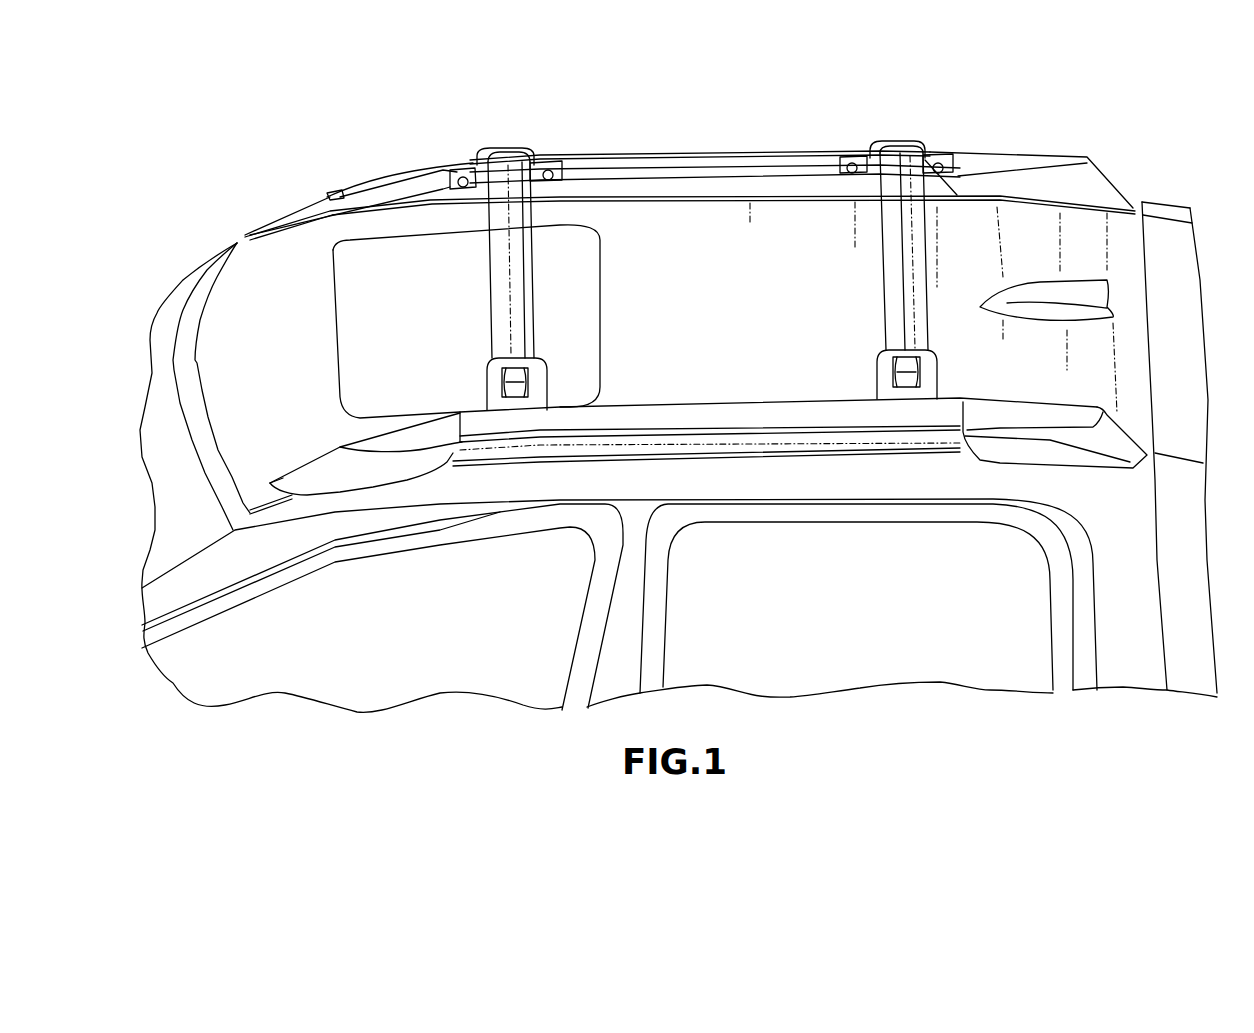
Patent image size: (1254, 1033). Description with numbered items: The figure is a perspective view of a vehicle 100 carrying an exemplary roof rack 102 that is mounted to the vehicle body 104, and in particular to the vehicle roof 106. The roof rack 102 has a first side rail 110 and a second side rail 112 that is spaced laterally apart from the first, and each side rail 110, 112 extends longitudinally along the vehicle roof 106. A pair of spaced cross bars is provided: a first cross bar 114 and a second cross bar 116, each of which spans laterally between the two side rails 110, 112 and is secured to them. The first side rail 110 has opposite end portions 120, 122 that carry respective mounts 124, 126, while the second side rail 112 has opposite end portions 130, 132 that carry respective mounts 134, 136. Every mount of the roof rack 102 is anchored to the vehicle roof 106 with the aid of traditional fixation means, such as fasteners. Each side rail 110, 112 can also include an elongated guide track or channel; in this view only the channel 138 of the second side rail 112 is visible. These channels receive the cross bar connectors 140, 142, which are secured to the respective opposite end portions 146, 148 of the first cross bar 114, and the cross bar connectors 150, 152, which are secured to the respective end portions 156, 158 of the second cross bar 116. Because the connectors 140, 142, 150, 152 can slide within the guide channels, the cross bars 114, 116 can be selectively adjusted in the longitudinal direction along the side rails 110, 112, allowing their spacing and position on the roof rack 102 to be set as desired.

The vehicle 100 is at (318, 738).
The roof rack 102 is at (508, 137).
The vehicle body 104 is at (497, 490).
The vehicle roof 106 is at (712, 323).
The first side rail 110 is at (773, 418).
The second side rail 112 is at (710, 158).
The first cross bar 114 is at (500, 260).
The second cross bar 116 is at (893, 297).
The end portion of first side rail 120 is at (528, 425).
The end portion of first side rail 122 is at (937, 418).
The mount 124 is at (377, 467).
The mount 126 is at (1020, 443).
The end portion of second side rail 130 is at (460, 160).
The end portion of second side rail 132 is at (938, 150).
The mount 134 is at (327, 212).
The mount 136 is at (1095, 188).
The channel 138 is at (673, 160).
The cross bar connector 140 is at (493, 400).
The cross bar connector 142 is at (543, 157).
The end portion of first cross bar 146 is at (498, 343).
The end portion of first cross bar 148 is at (497, 188).
The cross bar connector 150 is at (880, 382).
The cross bar connector 152 is at (850, 150).
The end portion of second cross bar 156 is at (915, 330).
The end portion of second cross bar 158 is at (888, 177).